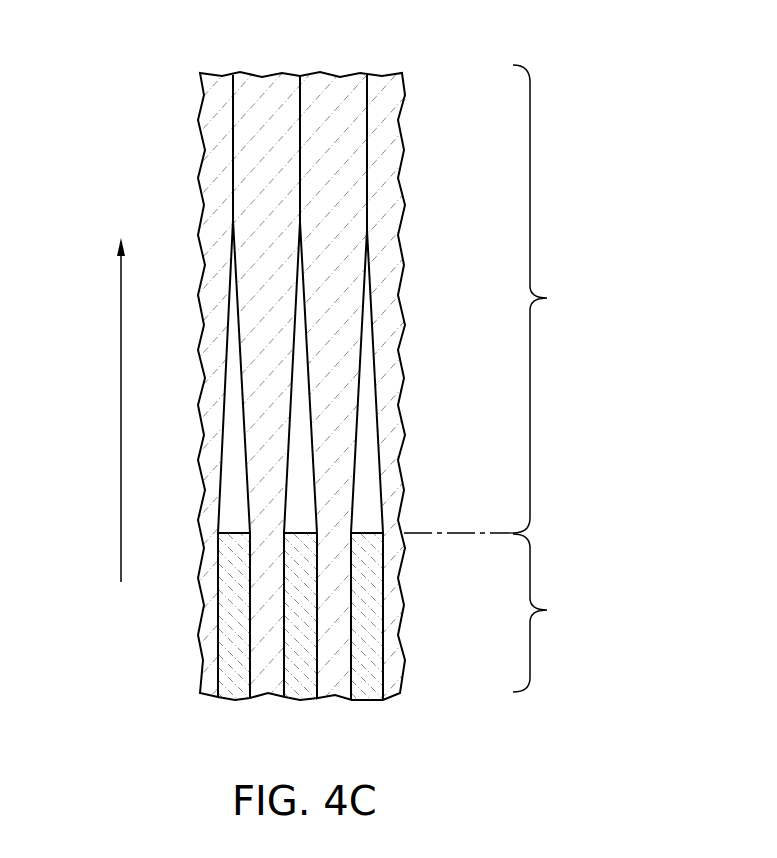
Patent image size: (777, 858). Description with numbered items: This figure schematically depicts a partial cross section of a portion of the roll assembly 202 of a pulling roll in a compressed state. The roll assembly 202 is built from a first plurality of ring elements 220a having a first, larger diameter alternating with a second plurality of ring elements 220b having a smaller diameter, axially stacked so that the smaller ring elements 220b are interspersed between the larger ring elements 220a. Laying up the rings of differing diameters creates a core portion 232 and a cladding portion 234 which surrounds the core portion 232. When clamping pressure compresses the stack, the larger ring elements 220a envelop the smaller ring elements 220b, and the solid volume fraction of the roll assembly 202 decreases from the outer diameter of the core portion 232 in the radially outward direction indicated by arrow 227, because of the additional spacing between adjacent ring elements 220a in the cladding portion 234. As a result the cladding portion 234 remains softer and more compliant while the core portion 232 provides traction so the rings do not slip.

The roll assembly 202 is at (166, 95).
The first plurality of ring elements 220a is at (262, 85).
The second plurality of ring elements 220b is at (233, 694).
The arrow 227 is at (121, 428).
The cladding portion 234 is at (503, 299).
The core portion 232 is at (557, 613).